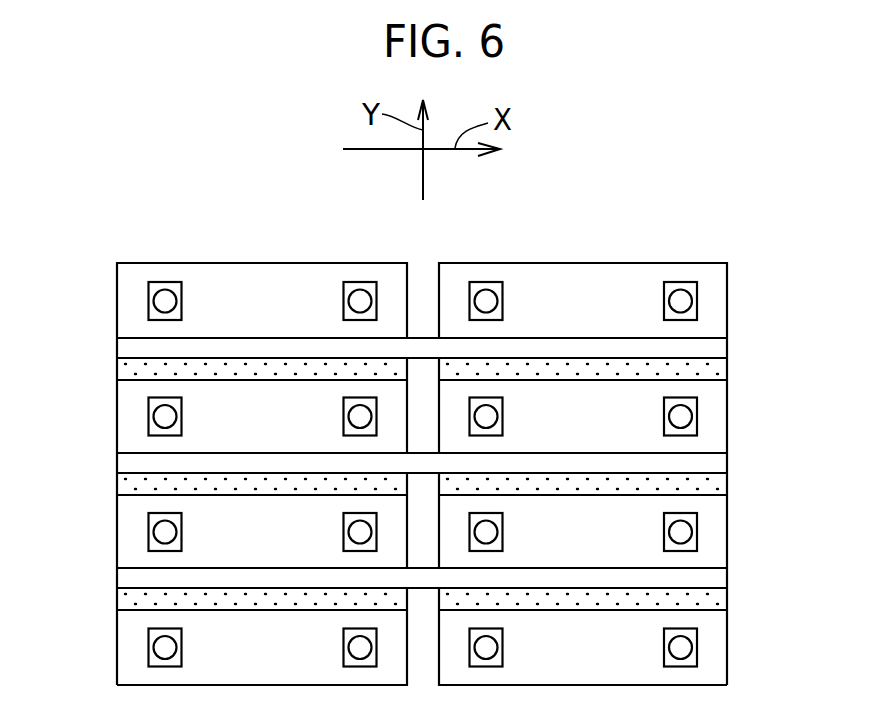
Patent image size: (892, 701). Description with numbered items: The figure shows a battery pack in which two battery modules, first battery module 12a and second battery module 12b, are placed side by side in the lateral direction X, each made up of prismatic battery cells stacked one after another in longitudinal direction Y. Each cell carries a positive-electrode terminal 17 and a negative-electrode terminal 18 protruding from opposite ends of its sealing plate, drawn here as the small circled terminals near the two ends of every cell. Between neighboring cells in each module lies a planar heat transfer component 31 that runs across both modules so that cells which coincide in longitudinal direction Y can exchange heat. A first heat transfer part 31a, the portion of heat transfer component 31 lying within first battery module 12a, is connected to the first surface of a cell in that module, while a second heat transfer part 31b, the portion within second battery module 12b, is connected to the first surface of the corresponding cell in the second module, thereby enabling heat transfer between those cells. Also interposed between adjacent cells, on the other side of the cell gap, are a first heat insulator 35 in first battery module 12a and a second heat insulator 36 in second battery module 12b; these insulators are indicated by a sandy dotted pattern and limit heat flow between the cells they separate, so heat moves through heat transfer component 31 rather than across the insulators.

The first battery module 12a is at (270, 262).
The second battery module 12b is at (608, 262).
The positive-electrode terminal 17 is at (165, 283).
The negative-electrode terminal 18 is at (358, 284).
The heat transfer component 31 is at (213, 338).
The first heat transfer part 31a is at (270, 348).
The second heat transfer part 31b is at (563, 348).
The first heat insulator 35 is at (130, 370).
The second heat insulator 36 is at (712, 370).